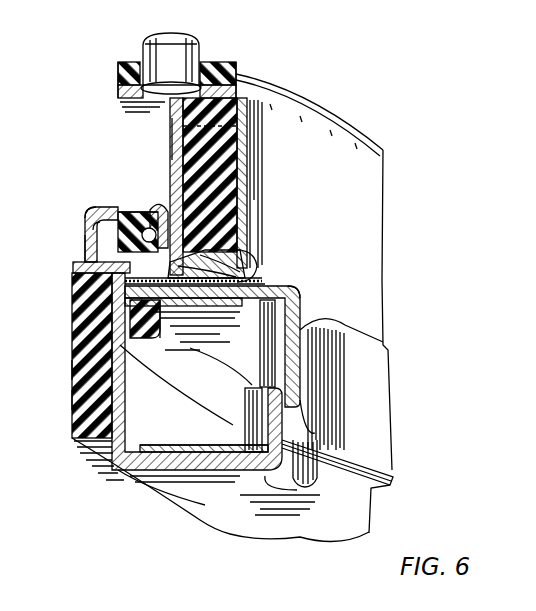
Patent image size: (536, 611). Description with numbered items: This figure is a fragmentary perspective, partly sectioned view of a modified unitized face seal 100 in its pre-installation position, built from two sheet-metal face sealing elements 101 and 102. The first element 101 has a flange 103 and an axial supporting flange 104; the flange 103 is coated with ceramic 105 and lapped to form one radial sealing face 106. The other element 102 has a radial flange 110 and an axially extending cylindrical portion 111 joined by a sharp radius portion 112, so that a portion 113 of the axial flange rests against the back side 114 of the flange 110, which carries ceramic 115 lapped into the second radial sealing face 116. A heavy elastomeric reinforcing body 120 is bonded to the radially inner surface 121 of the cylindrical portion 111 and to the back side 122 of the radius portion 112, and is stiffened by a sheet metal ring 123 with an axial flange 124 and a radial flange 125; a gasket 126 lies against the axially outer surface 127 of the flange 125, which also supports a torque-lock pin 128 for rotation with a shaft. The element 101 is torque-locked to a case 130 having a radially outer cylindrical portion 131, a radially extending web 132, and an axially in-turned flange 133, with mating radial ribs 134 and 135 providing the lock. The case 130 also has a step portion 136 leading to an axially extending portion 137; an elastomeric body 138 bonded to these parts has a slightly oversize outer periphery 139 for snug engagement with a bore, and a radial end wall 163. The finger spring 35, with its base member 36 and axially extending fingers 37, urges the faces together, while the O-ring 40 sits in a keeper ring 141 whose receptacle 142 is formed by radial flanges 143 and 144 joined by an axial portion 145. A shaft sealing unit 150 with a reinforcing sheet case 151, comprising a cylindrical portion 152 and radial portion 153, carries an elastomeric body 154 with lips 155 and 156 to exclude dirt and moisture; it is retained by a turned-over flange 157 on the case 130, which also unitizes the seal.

The face seal 100 is at (320, 108).
The face sealing element 101 is at (312, 375).
The face sealing element 102 is at (169, 142).
The flange 103 is at (322, 338).
The axial supporting flange 104 is at (320, 395).
The ceramic 105 is at (302, 300).
The radial sealing face 106 is at (300, 290).
The radial flange 110 is at (236, 278).
The axially extending cylindrical portion 111 is at (174, 125).
The sharp radius portion 112 is at (240, 262).
The portion of the axial flange 113 is at (232, 252).
The back side 114 is at (242, 272).
The ceramic 115 is at (240, 281).
The second radial sealing face 116 is at (262, 286).
The reinforcing body 120 is at (240, 143).
The radially inner surface 121 is at (238, 121).
The back side 122 is at (250, 205).
The sheet metal ring 123 is at (258, 100).
The axial flange 124 is at (246, 164).
The radial flange 125 is at (240, 96).
The gasket 126 is at (228, 64).
The axially outer surface 127 is at (128, 63).
The torque-lock pin 128 is at (200, 46).
The case 130 is at (167, 488).
The radially outer cylindrical portion 131 is at (80, 445).
The radially extending web 132 is at (185, 486).
The axially in-turned flange 133 is at (300, 437).
The radial rib 134 is at (330, 322).
The radial rib 135 is at (300, 482).
The step portion 136 is at (82, 302).
The axially extending portion 137 is at (88, 247).
The elastomeric body 138 is at (80, 370).
The outer periphery 139 is at (78, 395).
The keeper ring 141 is at (190, 318).
The O-ring receptacle 142 is at (131, 326).
The radial flange 143 is at (250, 320).
The radial flange 144 is at (138, 345).
The axial portion 145 is at (195, 331).
The shaft sealing unit 150 is at (133, 215).
The reinforcing sheet case 151 is at (98, 227).
The axially extending cylindrical portion 152 is at (100, 222).
The radial portion 153 is at (85, 267).
The body of elastomeric material 154 is at (123, 212).
The lip 155 is at (163, 205).
The lip 156 is at (147, 203).
The turned-over radially in-turned flange 157 is at (108, 212).
The radial end wall 163 is at (105, 478).
The finger spring 35 is at (170, 447).
The base member 36 is at (185, 445).
The finger 37 is at (239, 420).
The O-ring 40 is at (133, 313).